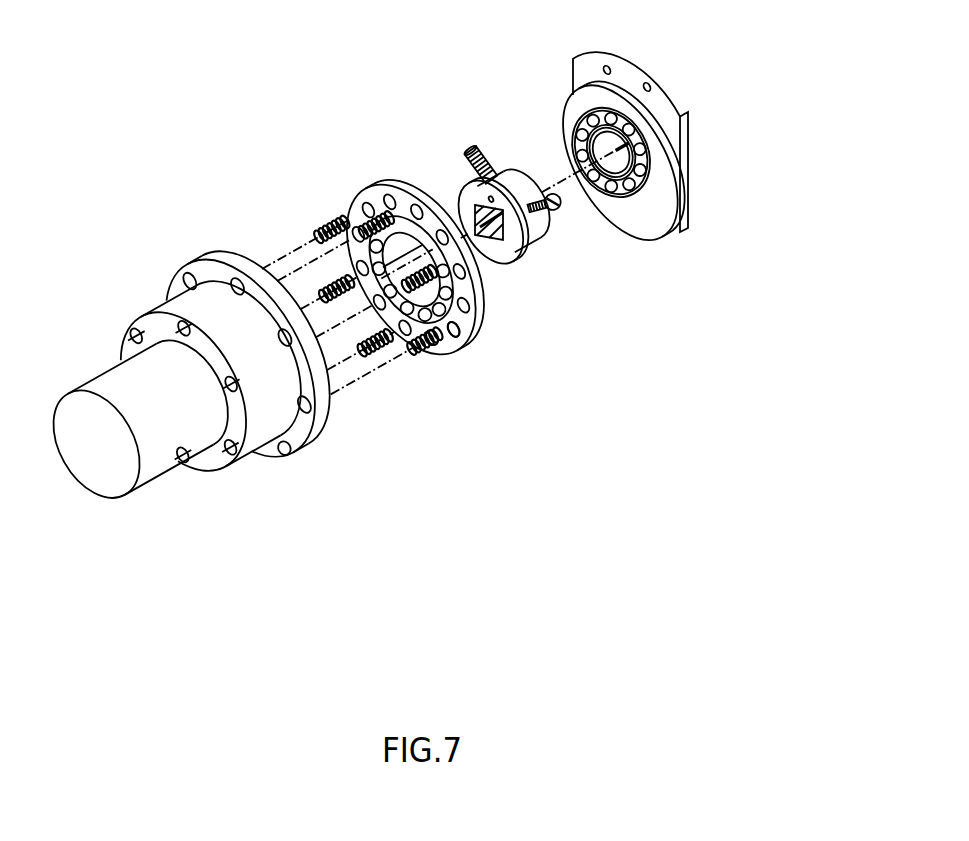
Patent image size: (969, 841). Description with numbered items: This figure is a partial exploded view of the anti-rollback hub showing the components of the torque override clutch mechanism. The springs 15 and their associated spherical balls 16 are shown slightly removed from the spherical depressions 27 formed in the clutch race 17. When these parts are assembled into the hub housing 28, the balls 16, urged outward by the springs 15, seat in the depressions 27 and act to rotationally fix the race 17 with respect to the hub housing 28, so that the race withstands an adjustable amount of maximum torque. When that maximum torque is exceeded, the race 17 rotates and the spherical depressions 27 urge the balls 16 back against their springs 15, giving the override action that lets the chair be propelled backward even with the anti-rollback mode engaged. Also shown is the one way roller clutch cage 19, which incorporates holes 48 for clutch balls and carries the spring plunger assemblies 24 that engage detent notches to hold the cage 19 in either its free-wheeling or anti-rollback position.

The springs 15 is at (373, 417).
The spherical balls 16 is at (450, 419).
The clutch race 17 is at (369, 246).
The one way roller clutch cage 19 is at (667, 188).
The spring plunger assemblies 24 is at (418, 131).
The spherical depressions 27 is at (480, 305).
The hub housing 28 is at (141, 464).
The holes 48 is at (668, 152).